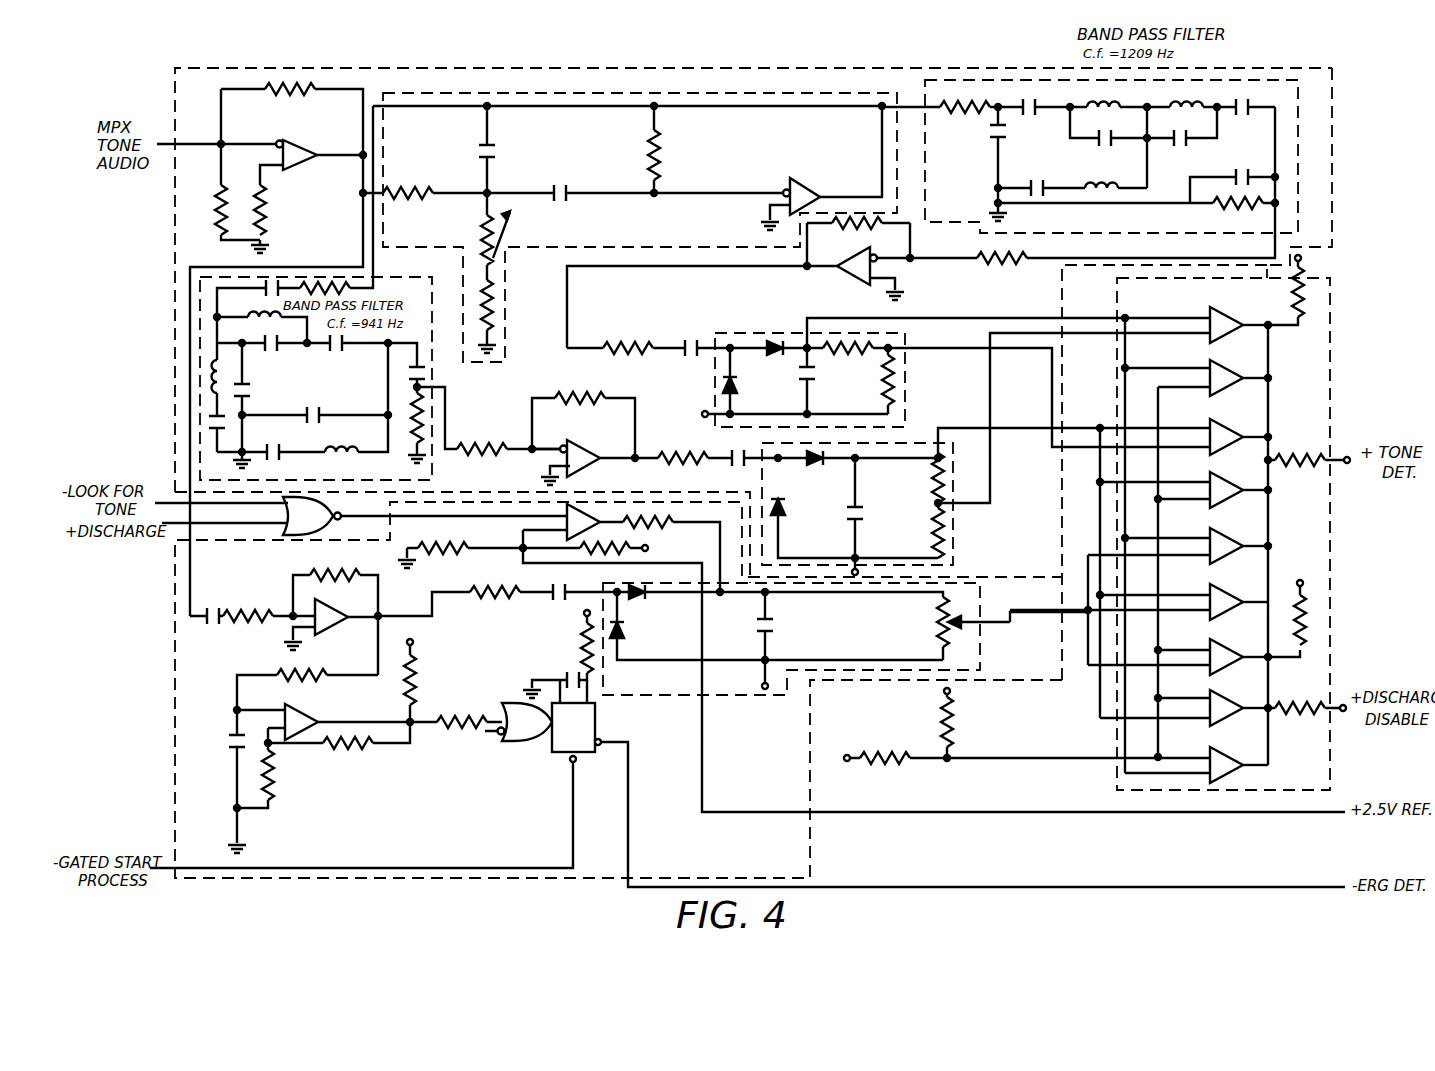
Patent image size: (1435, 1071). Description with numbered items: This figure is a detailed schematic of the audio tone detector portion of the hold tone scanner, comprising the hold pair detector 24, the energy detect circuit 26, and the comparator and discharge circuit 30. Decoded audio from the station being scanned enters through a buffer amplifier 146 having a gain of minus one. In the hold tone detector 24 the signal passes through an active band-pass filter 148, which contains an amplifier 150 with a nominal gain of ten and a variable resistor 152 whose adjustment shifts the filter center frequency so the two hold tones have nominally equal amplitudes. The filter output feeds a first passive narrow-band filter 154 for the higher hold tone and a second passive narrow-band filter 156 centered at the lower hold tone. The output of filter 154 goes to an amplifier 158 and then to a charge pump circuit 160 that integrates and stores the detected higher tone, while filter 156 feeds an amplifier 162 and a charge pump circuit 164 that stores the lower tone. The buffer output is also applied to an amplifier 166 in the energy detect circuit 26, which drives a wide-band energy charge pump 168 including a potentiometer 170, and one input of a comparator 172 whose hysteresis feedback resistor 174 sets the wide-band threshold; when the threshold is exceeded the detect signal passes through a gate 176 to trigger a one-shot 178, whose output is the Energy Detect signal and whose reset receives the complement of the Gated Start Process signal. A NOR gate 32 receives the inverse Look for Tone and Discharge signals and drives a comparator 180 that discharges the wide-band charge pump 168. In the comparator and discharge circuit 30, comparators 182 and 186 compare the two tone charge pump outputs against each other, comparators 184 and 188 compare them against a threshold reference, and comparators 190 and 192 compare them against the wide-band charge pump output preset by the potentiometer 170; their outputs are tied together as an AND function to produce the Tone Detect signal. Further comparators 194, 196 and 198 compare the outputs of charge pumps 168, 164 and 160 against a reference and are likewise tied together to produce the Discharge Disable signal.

The hold pair detector 24 is at (958, 68).
The energy detect circuit 26 is at (172, 697).
The comparator and discharge circuit 30 is at (1330, 368).
The NOR gate 32 is at (342, 512).
The buffer amplifier 146 is at (300, 147).
The active band-pass filter 148 is at (720, 100).
The amplifier 150 is at (805, 190).
The variable resistor 152 is at (486, 223).
The first passive narrow-band filter 154 is at (1298, 116).
The second passive narrow-band filter 156 is at (200, 345).
The amplifier 158 is at (861, 284).
The 1209 Hz charge pump circuit 160 is at (780, 322).
The amplifier 162 is at (589, 452).
The 941 Hz charge pump circuit 164 is at (955, 550).
The amplifier 166 is at (337, 614).
The wide-band energy charge pump 168 is at (722, 697).
The potentiometer 170 is at (936, 630).
The comparator 172 is at (318, 718).
The hysteresis feedback resistor 174 is at (345, 760).
The gate 176 is at (528, 742).
The one-shot 178 is at (560, 762).
The comparator 180 is at (586, 505).
The comparator 182 is at (1236, 318).
The comparator 184 is at (1232, 372).
The comparator 186 is at (1232, 430).
The comparator 188 is at (1232, 483).
The comparator 190 is at (1235, 538).
The comparator 192 is at (1232, 594).
The comparator 194 is at (1232, 650).
The comparator 196 is at (1232, 703).
The comparator 198 is at (1232, 758).